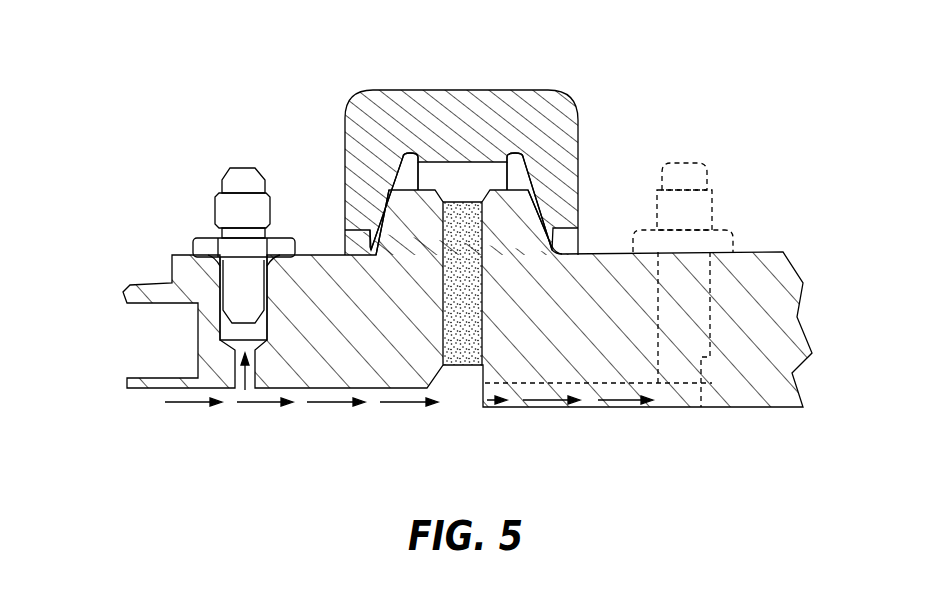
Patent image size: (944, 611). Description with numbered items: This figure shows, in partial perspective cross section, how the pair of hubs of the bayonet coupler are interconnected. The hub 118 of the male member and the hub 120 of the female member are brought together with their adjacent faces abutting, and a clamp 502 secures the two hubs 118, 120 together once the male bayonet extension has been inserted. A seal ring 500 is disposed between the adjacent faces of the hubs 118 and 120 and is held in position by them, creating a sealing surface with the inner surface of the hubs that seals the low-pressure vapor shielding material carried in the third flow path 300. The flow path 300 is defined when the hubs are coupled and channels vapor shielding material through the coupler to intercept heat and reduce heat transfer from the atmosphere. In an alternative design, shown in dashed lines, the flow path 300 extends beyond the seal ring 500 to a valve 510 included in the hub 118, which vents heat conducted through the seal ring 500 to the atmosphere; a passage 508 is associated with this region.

The hub 118 is at (603, 252).
The hub 120 is at (331, 253).
The third flow path 300 is at (182, 403).
The seal ring 500 is at (460, 355).
The clamp 502 is at (533, 90).
The fluid passage 508 is at (487, 340).
The valve 510 is at (713, 197).